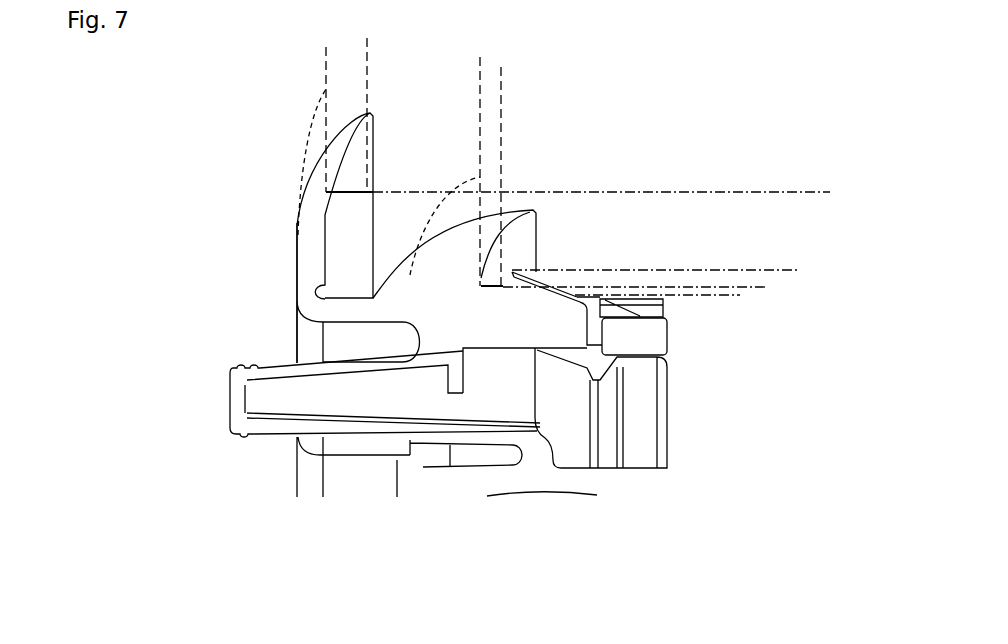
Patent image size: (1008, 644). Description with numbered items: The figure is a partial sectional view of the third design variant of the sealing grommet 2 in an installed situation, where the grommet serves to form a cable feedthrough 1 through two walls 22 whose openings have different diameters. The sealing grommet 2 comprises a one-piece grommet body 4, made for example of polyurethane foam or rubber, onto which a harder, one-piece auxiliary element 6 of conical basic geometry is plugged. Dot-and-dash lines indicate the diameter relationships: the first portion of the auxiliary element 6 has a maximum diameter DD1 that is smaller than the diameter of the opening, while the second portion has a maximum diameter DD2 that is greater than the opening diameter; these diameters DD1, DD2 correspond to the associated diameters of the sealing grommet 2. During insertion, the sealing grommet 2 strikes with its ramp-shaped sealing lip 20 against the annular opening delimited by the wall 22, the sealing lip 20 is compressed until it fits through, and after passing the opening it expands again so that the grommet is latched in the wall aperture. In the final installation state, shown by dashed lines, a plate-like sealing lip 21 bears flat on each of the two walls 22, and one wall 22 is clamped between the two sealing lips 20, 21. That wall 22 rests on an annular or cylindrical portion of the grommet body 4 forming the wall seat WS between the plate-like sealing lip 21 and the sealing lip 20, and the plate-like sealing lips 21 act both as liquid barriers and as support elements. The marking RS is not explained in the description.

The cable feedthrough 1 is at (140, 519).
The sealing grommet 2 is at (140, 448).
The grommet body 4 is at (559, 350).
The auxiliary element 6 is at (594, 322).
The sealing lip 20 is at (545, 296).
The plate-like sealing lip 21 is at (451, 228).
The wall 22 is at (477, 71).
The wall seat WS is at (483, 289).
The radial gap RS is at (636, 329).
The maximum diameter of the second portion DD2 is at (752, 269).
The maximum diameter of the first portion DD1 is at (718, 298).